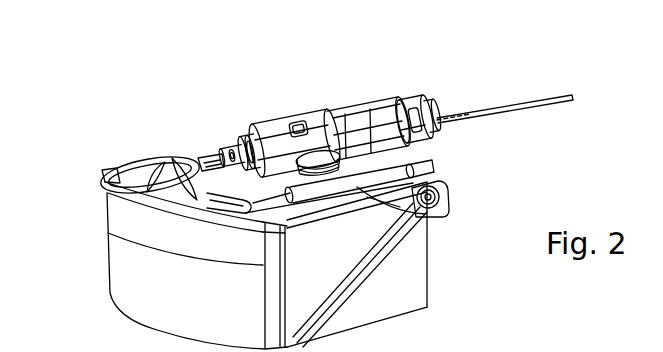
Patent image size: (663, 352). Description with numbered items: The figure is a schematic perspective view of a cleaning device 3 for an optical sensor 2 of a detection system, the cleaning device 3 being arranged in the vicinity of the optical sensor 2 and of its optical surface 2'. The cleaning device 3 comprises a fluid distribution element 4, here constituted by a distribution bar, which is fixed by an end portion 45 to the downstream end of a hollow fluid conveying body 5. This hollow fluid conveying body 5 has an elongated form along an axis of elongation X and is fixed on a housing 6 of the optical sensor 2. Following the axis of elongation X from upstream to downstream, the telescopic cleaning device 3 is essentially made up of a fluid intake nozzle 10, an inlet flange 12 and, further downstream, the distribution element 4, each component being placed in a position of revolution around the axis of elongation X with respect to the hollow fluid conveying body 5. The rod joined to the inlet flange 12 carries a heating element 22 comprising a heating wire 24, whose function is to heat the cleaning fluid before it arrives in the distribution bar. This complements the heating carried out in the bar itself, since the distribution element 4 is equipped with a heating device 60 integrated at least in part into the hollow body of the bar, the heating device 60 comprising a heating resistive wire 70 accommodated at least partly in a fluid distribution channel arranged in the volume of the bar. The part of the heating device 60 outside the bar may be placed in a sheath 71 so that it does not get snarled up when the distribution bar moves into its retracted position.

The optical sensor 2 is at (296, 258).
The optical surface 2' is at (151, 256).
The cleaning device 3 is at (345, 99).
The fluid distribution element 4 is at (100, 163).
The hollow fluid conveying body 5 is at (277, 113).
The housing 6 is at (422, 186).
The fluid intake nozzle 10 is at (433, 110).
The inlet flange 12 is at (413, 108).
The heating element 22 is at (505, 69).
The heating wire 24 is at (530, 96).
The end portion 45 is at (220, 140).
The heating device 60 is at (425, 167).
The heating resistive wire 70 is at (440, 153).
The sheath 71 is at (450, 213).
The axis of elongation X is at (460, 110).